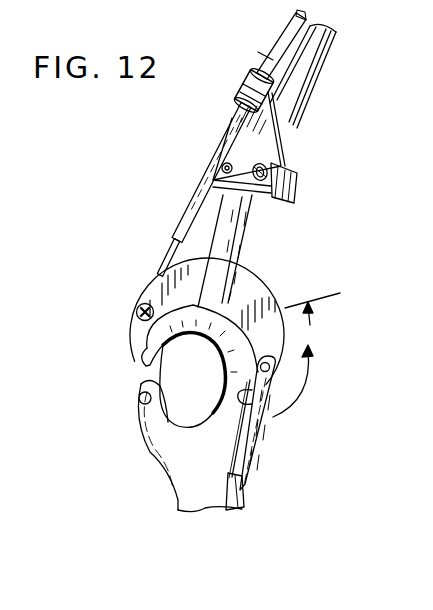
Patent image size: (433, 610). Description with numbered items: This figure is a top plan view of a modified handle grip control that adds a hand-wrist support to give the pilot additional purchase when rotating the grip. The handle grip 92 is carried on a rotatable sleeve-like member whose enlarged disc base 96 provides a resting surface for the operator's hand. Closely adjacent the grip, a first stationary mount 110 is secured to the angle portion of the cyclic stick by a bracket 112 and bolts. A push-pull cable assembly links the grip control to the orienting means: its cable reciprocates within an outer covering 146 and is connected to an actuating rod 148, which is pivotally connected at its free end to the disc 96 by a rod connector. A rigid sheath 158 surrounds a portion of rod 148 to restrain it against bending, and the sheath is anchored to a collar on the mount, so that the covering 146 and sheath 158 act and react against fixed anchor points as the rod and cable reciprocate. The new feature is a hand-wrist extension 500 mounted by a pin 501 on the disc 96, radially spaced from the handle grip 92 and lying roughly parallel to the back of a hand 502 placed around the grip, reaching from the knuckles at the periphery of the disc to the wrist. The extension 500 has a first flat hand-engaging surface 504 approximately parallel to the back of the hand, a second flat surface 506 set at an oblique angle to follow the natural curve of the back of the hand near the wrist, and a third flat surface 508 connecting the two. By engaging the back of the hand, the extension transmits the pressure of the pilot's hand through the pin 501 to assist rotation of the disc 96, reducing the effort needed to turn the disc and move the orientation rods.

The outer covering 146 is at (288, 34).
The rigid sheath 158 is at (197, 192).
The actuating rod 148 is at (165, 258).
The first stationary mount 110 is at (266, 143).
The bracket 112 is at (298, 187).
The disc base 96 is at (262, 281).
The handle grip 92 is at (163, 366).
The hand 502 is at (172, 463).
The second flat surface 506 is at (218, 502).
The hand-wrist extension 500 is at (257, 453).
The third flat surface 508 is at (266, 424).
The pin 501 is at (270, 352).
The first flat hand-engaging surface 504 is at (270, 388).